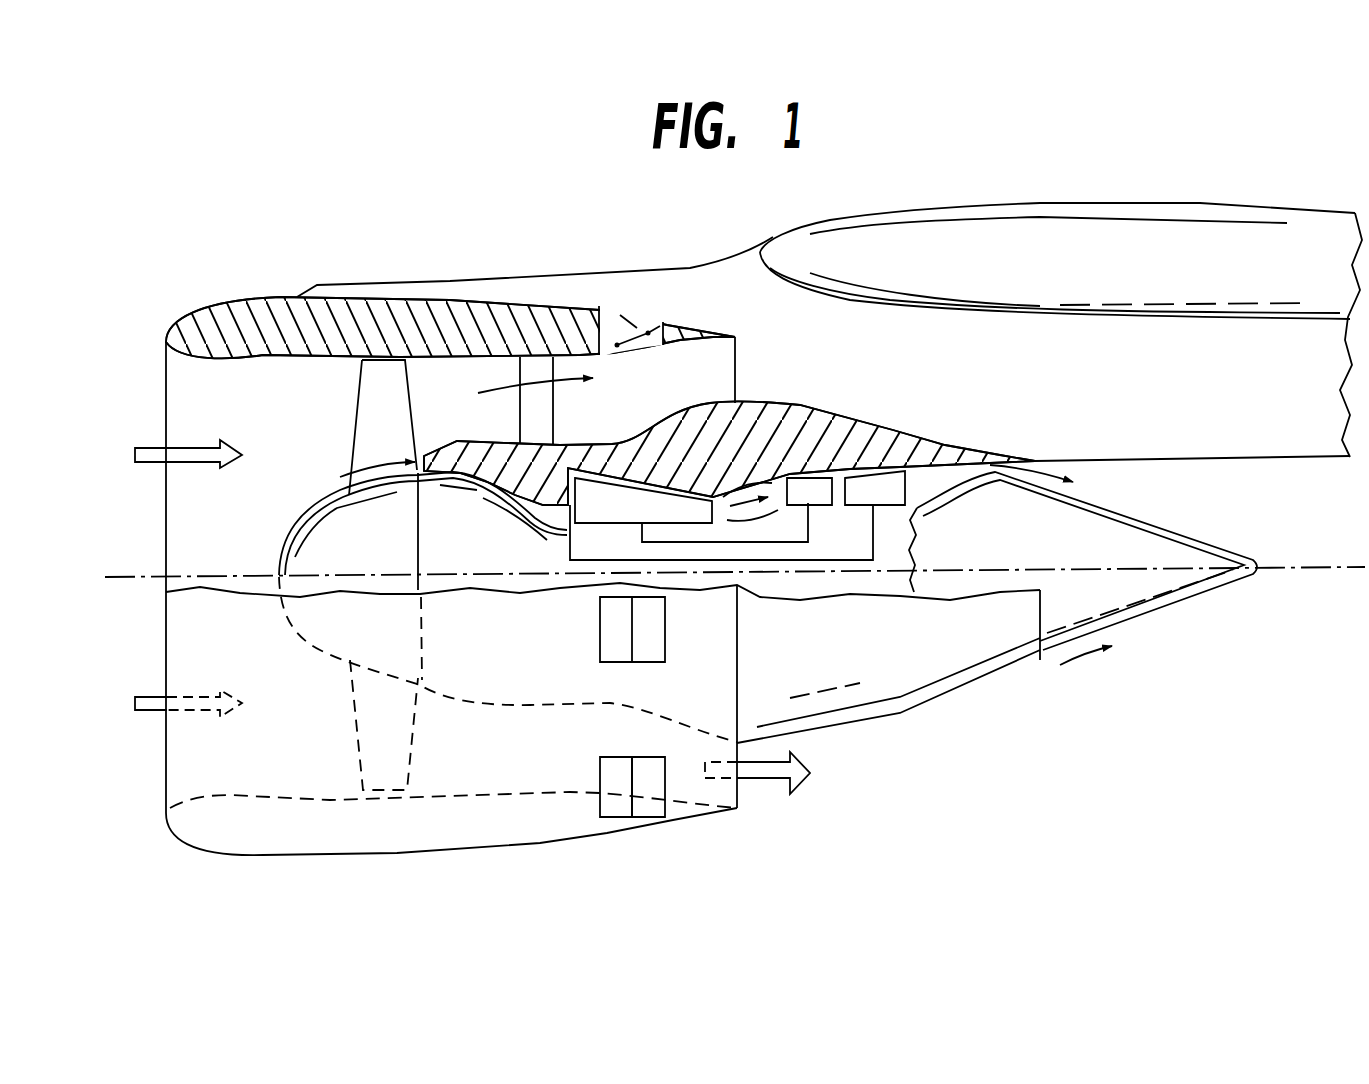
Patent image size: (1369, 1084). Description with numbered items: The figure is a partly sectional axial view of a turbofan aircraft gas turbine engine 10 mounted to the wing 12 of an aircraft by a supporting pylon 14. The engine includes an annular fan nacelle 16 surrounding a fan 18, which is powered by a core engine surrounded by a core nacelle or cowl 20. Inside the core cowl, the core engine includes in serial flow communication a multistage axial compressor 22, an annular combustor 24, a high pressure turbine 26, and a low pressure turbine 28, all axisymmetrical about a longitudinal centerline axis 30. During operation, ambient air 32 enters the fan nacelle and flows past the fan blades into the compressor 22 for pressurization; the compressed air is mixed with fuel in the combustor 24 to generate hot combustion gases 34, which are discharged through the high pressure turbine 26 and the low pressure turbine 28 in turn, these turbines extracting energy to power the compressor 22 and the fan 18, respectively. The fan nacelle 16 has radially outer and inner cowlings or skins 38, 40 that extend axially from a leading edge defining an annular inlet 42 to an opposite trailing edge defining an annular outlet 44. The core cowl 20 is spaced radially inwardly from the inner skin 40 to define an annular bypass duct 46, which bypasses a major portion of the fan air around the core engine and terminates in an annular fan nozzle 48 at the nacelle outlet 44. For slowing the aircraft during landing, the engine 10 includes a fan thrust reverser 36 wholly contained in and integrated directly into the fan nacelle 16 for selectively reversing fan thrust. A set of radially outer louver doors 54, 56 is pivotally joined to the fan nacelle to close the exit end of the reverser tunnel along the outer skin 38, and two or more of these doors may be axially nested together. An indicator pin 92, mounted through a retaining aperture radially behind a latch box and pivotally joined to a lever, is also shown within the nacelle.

The turbofan aircraft gas turbine engine 10 is at (255, 277).
The wing 12 is at (978, 207).
The supporting pylon 14 is at (1197, 399).
The fan nacelle 16 is at (252, 857).
The fan 18 is at (355, 416).
The core nacelle or cowl 20 is at (945, 440).
The multistage axial compressor 22 is at (594, 507).
The annular combustor 24 is at (762, 510).
The high pressure turbine 26 is at (820, 506).
The low pressure turbine 28 is at (894, 505).
The longitudinal or axial centerline axis 30 is at (1283, 557).
The ambient air 32 is at (152, 462).
The hot combustion gases 34 is at (1067, 663).
The fan thrust reverser 36 is at (636, 300).
The radially outer cowling or skin 38 is at (410, 295).
The radially inner cowling or skin 40 is at (470, 357).
The annular inlet 42 is at (165, 393).
The annular outlet 44 is at (735, 368).
The annular bypass duct 46 is at (495, 434).
The annular fan nozzle 48 is at (722, 385).
The radially outer louver door 54 is at (612, 807).
The radially outer louver door 56 is at (642, 807).
The indicator pin 92 is at (590, 631).